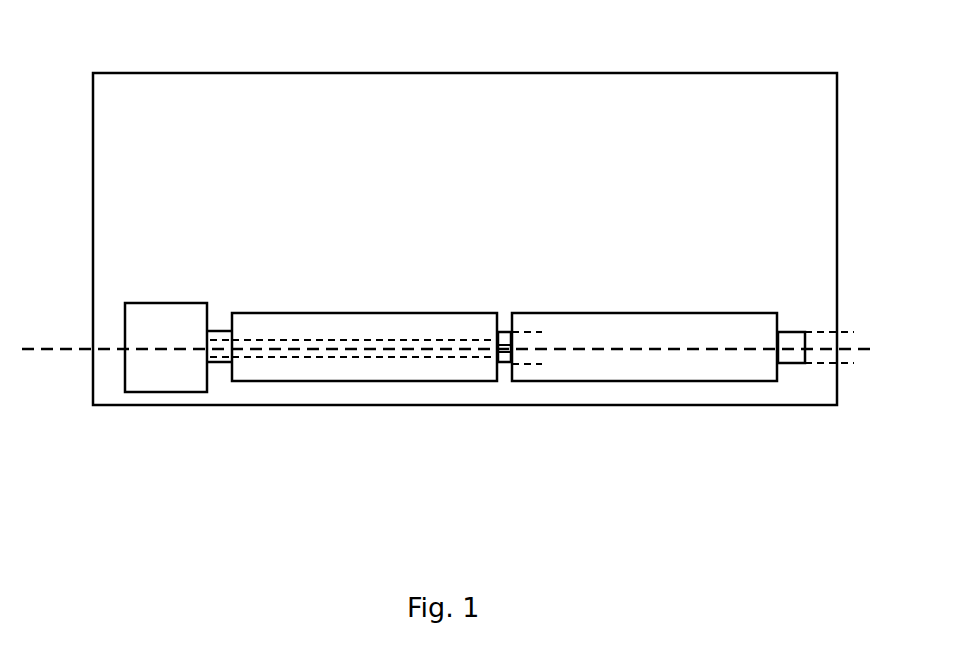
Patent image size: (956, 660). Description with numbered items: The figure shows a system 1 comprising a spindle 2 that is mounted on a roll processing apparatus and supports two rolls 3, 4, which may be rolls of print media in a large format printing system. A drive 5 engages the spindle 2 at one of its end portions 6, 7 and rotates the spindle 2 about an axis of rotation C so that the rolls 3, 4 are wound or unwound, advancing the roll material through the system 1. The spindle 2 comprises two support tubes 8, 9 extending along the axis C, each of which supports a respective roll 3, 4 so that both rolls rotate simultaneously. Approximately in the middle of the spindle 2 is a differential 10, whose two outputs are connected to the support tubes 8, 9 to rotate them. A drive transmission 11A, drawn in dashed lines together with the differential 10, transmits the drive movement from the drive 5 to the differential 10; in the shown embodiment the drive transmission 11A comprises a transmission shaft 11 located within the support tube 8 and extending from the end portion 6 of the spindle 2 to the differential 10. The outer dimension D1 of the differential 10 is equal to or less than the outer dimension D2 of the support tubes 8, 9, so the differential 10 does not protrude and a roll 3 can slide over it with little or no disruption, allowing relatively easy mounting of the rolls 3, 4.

The system 1 is at (456, 313).
The spindle 2 is at (792, 380).
The roll 3 is at (285, 365).
The roll 4 is at (697, 365).
The drive 5 is at (153, 327).
The end portion 6 is at (220, 297).
The end portion 7 is at (796, 328).
The support tube 8 is at (223, 365).
The support tube 9 is at (783, 334).
The differential 10 is at (503, 360).
The transmission shaft 11 is at (364, 446).
The drive transmission 11A is at (326, 358).
The axis of rotation C is at (73, 352).
The outer dimension of the differential D1 is at (536, 405).
The outer dimension of the support tubes D2 is at (847, 405).